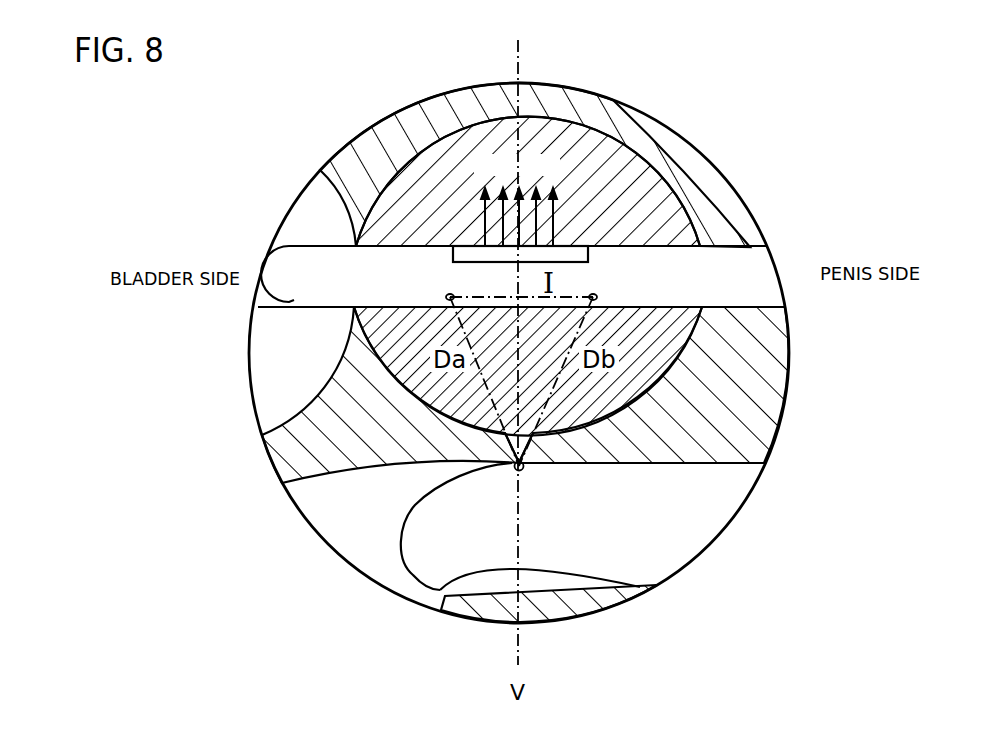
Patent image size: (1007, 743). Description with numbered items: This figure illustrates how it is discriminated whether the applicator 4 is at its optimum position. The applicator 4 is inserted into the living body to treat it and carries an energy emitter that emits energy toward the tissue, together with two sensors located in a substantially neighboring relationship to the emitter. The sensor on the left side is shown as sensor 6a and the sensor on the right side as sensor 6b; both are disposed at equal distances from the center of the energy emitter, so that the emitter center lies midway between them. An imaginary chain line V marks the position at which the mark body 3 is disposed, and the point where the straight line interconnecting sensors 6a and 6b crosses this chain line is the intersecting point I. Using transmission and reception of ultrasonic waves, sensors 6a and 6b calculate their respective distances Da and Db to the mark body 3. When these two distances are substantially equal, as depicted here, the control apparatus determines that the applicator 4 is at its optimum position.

The mark body 3 is at (521, 470).
The applicator 4 is at (295, 296).
The sensor 6a is at (358, 182).
The sensor 6b is at (667, 187).